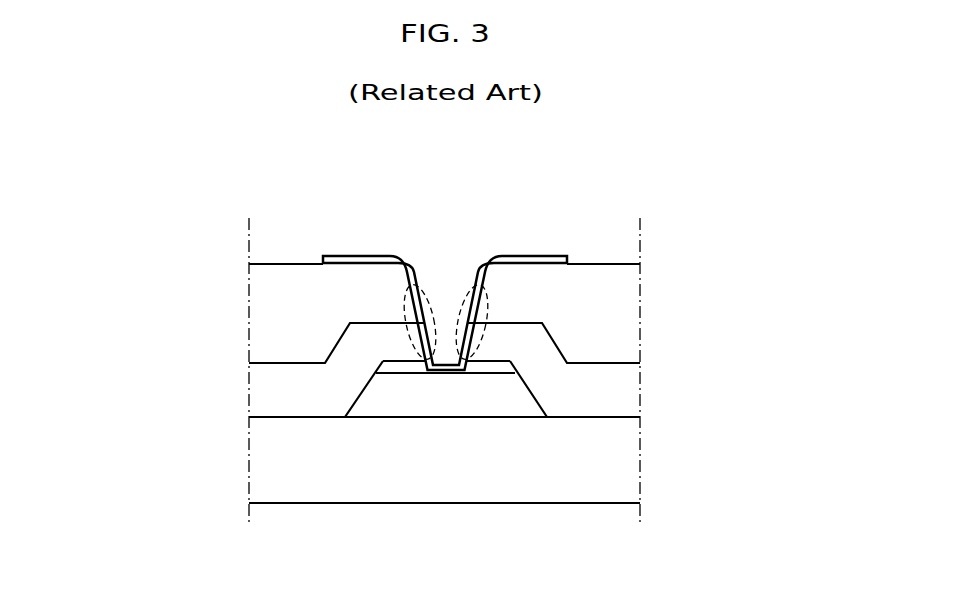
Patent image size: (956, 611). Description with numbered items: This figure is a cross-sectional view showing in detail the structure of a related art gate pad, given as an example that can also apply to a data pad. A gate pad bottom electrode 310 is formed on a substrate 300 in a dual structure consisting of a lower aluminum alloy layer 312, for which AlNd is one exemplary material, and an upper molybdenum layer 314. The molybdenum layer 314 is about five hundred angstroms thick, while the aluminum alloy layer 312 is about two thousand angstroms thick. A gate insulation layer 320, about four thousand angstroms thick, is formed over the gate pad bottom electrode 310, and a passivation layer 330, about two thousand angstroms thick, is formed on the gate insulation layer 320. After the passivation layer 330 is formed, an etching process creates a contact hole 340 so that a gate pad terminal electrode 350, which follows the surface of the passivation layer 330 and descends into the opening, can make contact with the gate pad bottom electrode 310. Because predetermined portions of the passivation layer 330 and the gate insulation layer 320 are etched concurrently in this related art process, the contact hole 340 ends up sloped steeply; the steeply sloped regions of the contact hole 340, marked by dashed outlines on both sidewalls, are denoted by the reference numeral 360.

The substrate 300 is at (263, 468).
The gate pad bottom electrode 310 is at (545, 386).
The aluminum alloy layer 312 is at (525, 398).
The molybdenum layer 314 is at (505, 364).
The gate insulation layer 320 is at (263, 392).
The passivation layer 330 is at (263, 318).
The contact hole 340 is at (444, 291).
The gate pad terminal electrode 350 is at (531, 255).
The steeply sloped region 360 is at (406, 291).